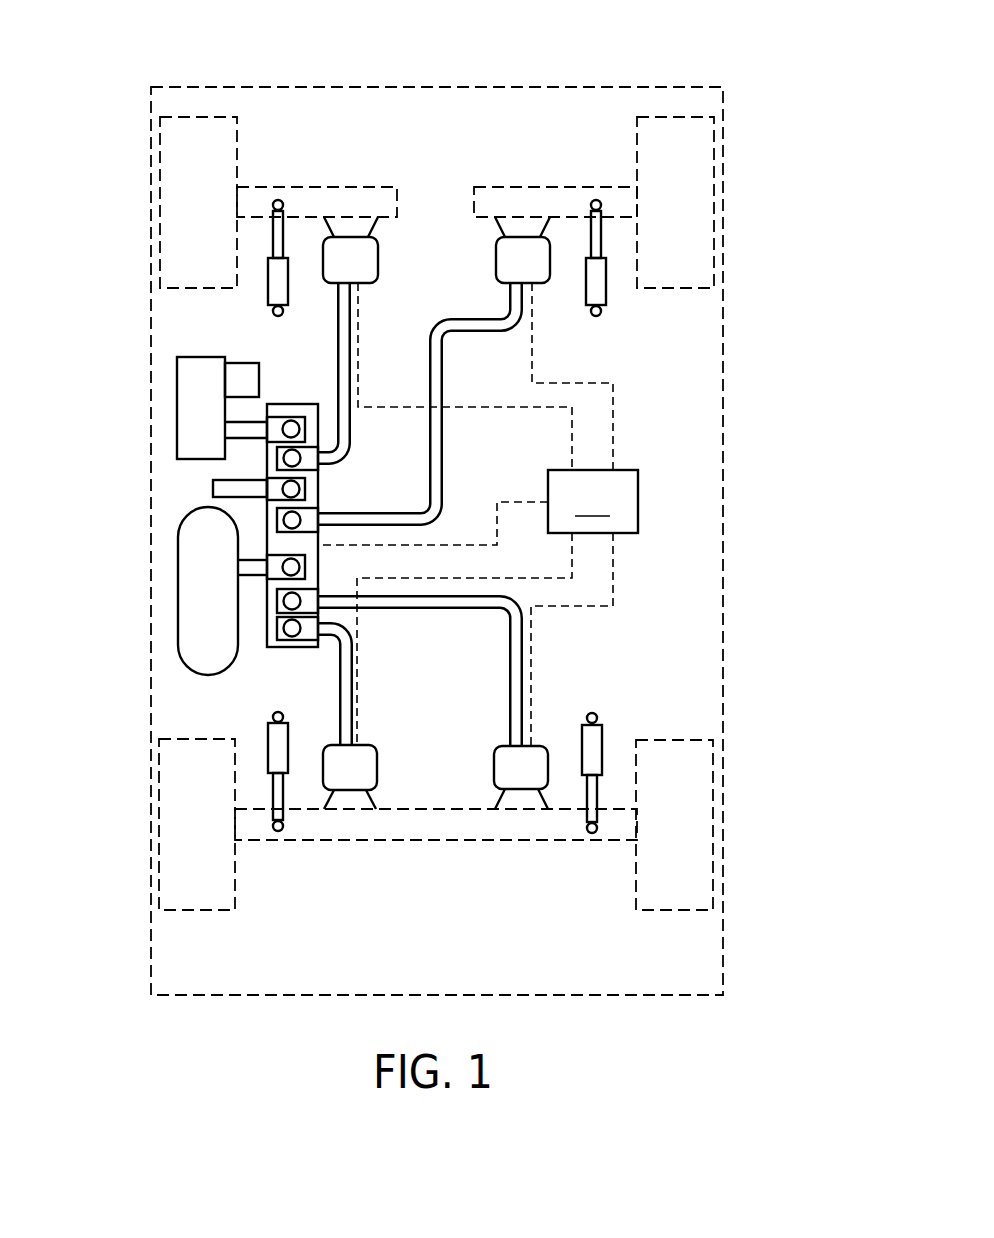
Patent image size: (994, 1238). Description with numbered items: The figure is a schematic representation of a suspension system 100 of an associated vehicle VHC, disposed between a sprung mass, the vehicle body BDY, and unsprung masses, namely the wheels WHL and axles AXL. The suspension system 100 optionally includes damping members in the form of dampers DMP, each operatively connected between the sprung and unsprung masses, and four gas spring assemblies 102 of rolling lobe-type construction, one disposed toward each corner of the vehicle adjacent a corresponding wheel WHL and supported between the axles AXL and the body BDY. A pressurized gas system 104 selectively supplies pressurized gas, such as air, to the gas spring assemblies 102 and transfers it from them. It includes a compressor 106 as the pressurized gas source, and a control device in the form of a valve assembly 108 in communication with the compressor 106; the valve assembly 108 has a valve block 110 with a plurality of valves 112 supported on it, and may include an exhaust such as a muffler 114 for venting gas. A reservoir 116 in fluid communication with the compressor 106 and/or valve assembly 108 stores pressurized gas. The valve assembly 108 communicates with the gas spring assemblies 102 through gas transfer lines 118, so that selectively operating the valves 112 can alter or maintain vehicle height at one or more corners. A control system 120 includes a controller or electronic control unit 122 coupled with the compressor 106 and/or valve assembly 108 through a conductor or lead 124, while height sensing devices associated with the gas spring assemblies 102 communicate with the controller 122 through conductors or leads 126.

The suspension system 100 is at (702, 336).
The gas spring assembly 102 is at (387, 280).
The pressurized gas system 104 is at (170, 496).
The compressor 106 is at (188, 371).
The valve assembly 108 is at (318, 500).
The valve block 110 is at (292, 648).
The valves 112 is at (300, 513).
The muffler 114 is at (212, 490).
The reservoir 116 is at (188, 585).
The gas transfer lines 118 is at (428, 375).
The control system 120 is at (680, 462).
The controller or electronic control unit (ECU) 122 is at (593, 501).
The conductor or lead 124 is at (517, 502).
The conductors or leads 126 is at (484, 407).
The vehicle body BDY is at (603, 87).
The vehicle VHC is at (716, 50).
The wheel WHL is at (172, 150).
The axle AXL is at (330, 196).
The damper DMP is at (268, 300).